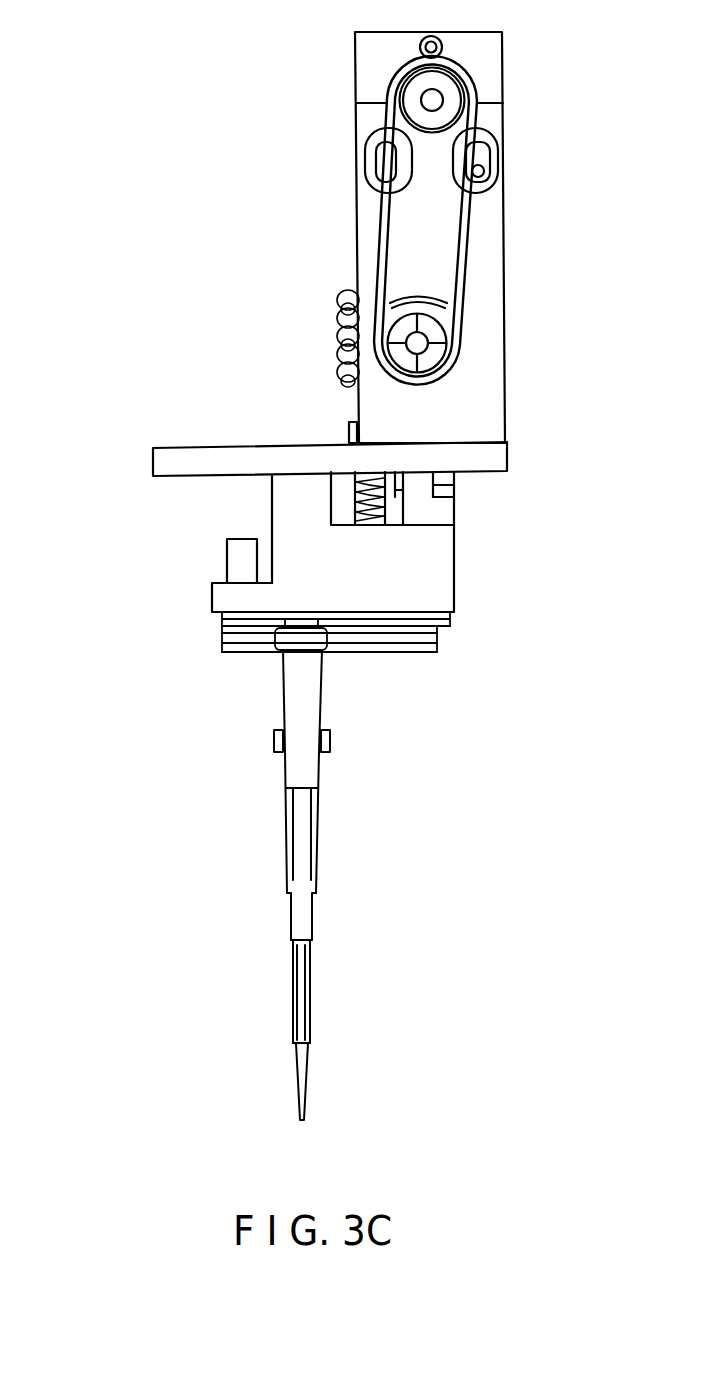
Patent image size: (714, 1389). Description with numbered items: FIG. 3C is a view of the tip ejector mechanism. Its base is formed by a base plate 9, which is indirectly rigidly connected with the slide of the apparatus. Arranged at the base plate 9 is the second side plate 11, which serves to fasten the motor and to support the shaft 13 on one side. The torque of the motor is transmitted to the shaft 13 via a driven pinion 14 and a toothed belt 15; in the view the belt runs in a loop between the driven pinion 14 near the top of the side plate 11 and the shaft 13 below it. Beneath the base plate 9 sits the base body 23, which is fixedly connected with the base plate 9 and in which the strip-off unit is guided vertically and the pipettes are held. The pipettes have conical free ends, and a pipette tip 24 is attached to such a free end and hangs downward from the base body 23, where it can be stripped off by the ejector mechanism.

The base plate 9 is at (187, 467).
The second side plate 11 is at (487, 395).
The shaft 13 is at (420, 340).
The driven pinion 14 is at (423, 88).
The toothed belt 15 is at (460, 257).
The base body 23 is at (423, 568).
The pipette tip 24 is at (295, 693).